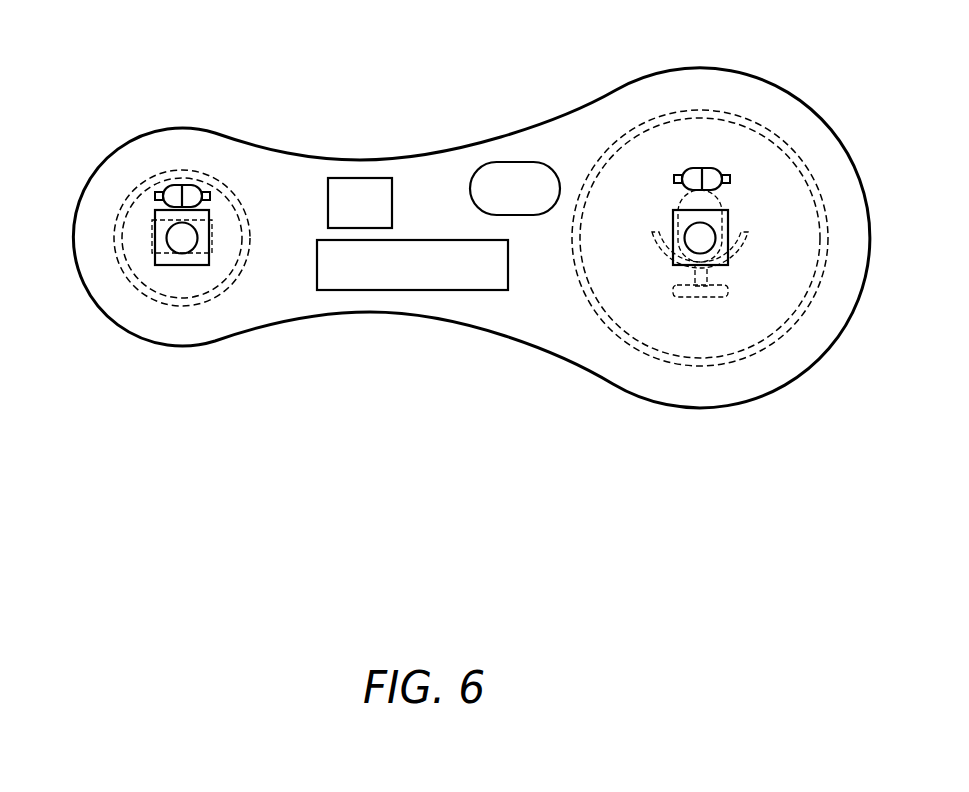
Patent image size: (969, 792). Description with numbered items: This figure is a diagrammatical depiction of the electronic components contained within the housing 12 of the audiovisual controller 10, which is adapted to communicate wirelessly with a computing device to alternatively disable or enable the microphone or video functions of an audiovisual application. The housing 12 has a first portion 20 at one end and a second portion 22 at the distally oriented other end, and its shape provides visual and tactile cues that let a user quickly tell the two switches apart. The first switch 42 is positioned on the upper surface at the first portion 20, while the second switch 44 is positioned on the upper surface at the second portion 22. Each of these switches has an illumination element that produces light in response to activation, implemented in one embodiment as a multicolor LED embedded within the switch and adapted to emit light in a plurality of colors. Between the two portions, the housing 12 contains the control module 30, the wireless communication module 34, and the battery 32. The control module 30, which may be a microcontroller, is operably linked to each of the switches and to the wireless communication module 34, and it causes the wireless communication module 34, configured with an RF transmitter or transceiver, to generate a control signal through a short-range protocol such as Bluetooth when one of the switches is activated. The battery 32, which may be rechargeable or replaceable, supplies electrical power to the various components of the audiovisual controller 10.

The audiovisual controller 10 is at (462, 248).
The housing 12 is at (217, 140).
The first portion 20 is at (737, 247).
The second portion 22 is at (136, 242).
The control module 30 is at (347, 185).
The battery 32 is at (340, 277).
The wireless communication module 34 is at (492, 175).
The first switch 42 is at (797, 230).
The second switch 44 is at (138, 232).